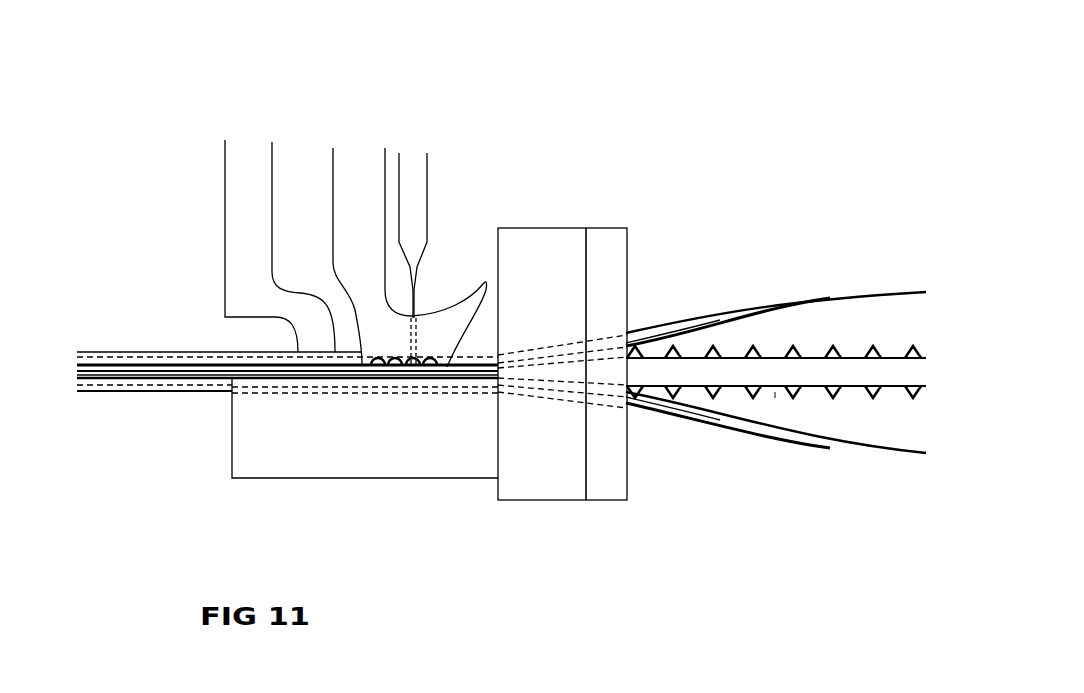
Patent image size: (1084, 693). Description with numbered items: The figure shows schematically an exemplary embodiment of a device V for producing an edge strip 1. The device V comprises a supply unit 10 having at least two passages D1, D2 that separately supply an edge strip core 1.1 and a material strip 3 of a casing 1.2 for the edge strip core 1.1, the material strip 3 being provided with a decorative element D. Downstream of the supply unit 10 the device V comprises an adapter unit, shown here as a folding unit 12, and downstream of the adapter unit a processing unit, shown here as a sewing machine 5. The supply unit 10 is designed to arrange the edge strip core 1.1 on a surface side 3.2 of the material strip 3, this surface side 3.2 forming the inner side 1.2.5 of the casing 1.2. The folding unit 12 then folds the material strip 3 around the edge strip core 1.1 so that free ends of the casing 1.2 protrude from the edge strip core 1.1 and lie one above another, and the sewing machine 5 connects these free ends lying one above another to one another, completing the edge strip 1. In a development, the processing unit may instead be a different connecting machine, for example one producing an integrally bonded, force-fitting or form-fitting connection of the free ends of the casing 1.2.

The edge strip 1 is at (167, 318).
The edge strip core 1.1 is at (893, 377).
The casing 1.2 is at (92, 352).
The inner side 1.2.5 is at (877, 324).
The material strip 3 is at (823, 290).
The surface side 3.2 is at (877, 436).
The sewing machine 5 is at (311, 140).
The supply unit 10 is at (612, 250).
The folding unit 12 is at (542, 253).
The device V is at (748, 117).
The decorative element D is at (793, 398).
The passage D1 is at (628, 402).
The passage D2 is at (632, 335).